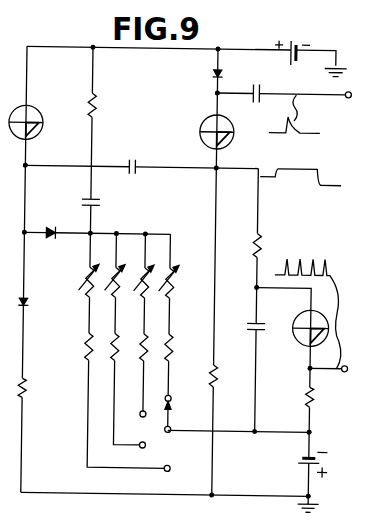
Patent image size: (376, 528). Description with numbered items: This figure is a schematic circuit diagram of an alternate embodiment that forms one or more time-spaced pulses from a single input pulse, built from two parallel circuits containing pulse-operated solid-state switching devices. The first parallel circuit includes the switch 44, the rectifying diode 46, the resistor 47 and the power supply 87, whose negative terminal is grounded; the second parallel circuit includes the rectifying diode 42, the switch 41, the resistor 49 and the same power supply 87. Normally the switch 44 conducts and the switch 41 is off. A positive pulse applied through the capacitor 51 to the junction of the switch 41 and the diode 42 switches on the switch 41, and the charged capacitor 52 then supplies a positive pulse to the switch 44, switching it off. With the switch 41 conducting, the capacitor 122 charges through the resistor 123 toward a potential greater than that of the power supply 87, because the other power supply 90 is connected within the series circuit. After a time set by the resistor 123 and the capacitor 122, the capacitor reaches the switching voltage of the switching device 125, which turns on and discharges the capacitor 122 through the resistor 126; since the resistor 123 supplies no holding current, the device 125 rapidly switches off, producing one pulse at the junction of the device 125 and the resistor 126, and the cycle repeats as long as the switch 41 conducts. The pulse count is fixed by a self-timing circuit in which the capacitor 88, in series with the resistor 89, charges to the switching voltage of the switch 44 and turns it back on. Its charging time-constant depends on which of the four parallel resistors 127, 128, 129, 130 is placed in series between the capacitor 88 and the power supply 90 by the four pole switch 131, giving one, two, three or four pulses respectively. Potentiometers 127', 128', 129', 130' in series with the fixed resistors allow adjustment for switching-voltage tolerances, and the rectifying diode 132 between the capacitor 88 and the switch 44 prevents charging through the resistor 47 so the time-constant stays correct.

The power supply 87 is at (296, 39).
The rectifying diode 42 is at (216, 79).
The capacitor 51 is at (261, 87).
The switch 44 is at (44, 124).
The resistor 89 is at (97, 109).
The switch 41 is at (235, 136).
The capacitor 52 is at (141, 171).
The rectifying diode 132 is at (58, 231).
The capacitor 88 is at (101, 206).
The potentiometer 130' is at (70, 277).
The potentiometer 129' is at (84, 291).
The potentiometer 128' is at (175, 271).
The potentiometer 127' is at (188, 292).
The resistor 130 is at (68, 347).
The resistor 129 is at (81, 356).
The resistor 128 is at (178, 343).
The resistor 127 is at (190, 358).
The rectifying diode 46 is at (30, 311).
The resistor 47 is at (31, 390).
The resistor 49 is at (222, 376).
The capacitor 122 is at (257, 325).
The resistor 123 is at (265, 246).
The pulse-operated solid-state switching device 125 is at (298, 332).
The resistor 126 is at (319, 396).
The power supply 90 is at (308, 460).
The four pole switch 131 is at (162, 434).